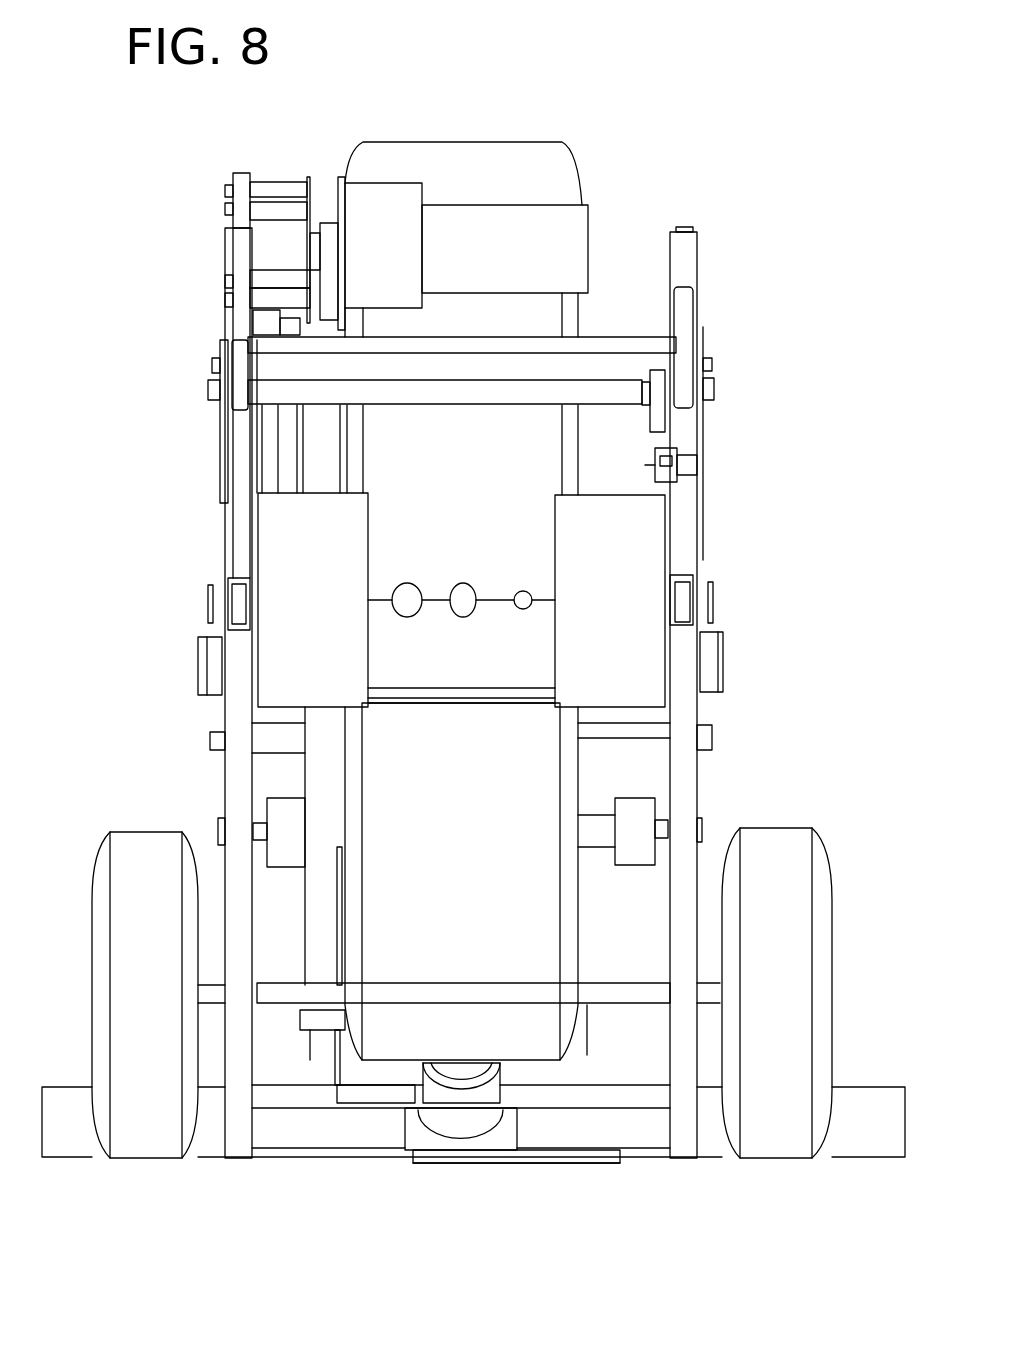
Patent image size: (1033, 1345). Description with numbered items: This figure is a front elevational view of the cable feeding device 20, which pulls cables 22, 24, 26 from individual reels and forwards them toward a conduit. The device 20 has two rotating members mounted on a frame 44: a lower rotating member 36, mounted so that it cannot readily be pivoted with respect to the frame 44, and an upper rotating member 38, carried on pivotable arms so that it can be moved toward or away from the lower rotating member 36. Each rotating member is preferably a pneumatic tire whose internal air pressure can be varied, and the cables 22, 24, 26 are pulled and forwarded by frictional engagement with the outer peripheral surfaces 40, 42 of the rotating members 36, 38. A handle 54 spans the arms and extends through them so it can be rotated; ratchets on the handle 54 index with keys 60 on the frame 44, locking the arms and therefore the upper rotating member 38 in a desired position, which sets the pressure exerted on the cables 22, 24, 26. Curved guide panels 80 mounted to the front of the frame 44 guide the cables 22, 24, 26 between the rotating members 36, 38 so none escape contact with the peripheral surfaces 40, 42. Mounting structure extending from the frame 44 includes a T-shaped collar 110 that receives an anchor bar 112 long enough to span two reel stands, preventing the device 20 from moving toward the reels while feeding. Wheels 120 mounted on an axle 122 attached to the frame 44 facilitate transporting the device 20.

The cable feeding device 20 is at (577, 1170).
The cable 22 is at (519, 591).
The cable 24 is at (461, 617).
The cable 26 is at (415, 586).
The lower rotating member 36 is at (470, 872).
The upper rotating member 38 is at (467, 464).
The outer peripheral surface 40 is at (552, 1067).
The outer peripheral surface 42 is at (477, 142).
The frame 44 is at (700, 800).
The handle 54 is at (617, 337).
The key 60 is at (208, 605).
The guide panel 80 is at (318, 627).
The T-shaped collar 110 is at (418, 1143).
The anchor bar 112 is at (866, 1087).
The wheel 120 is at (147, 832).
The axle 122 is at (633, 983).